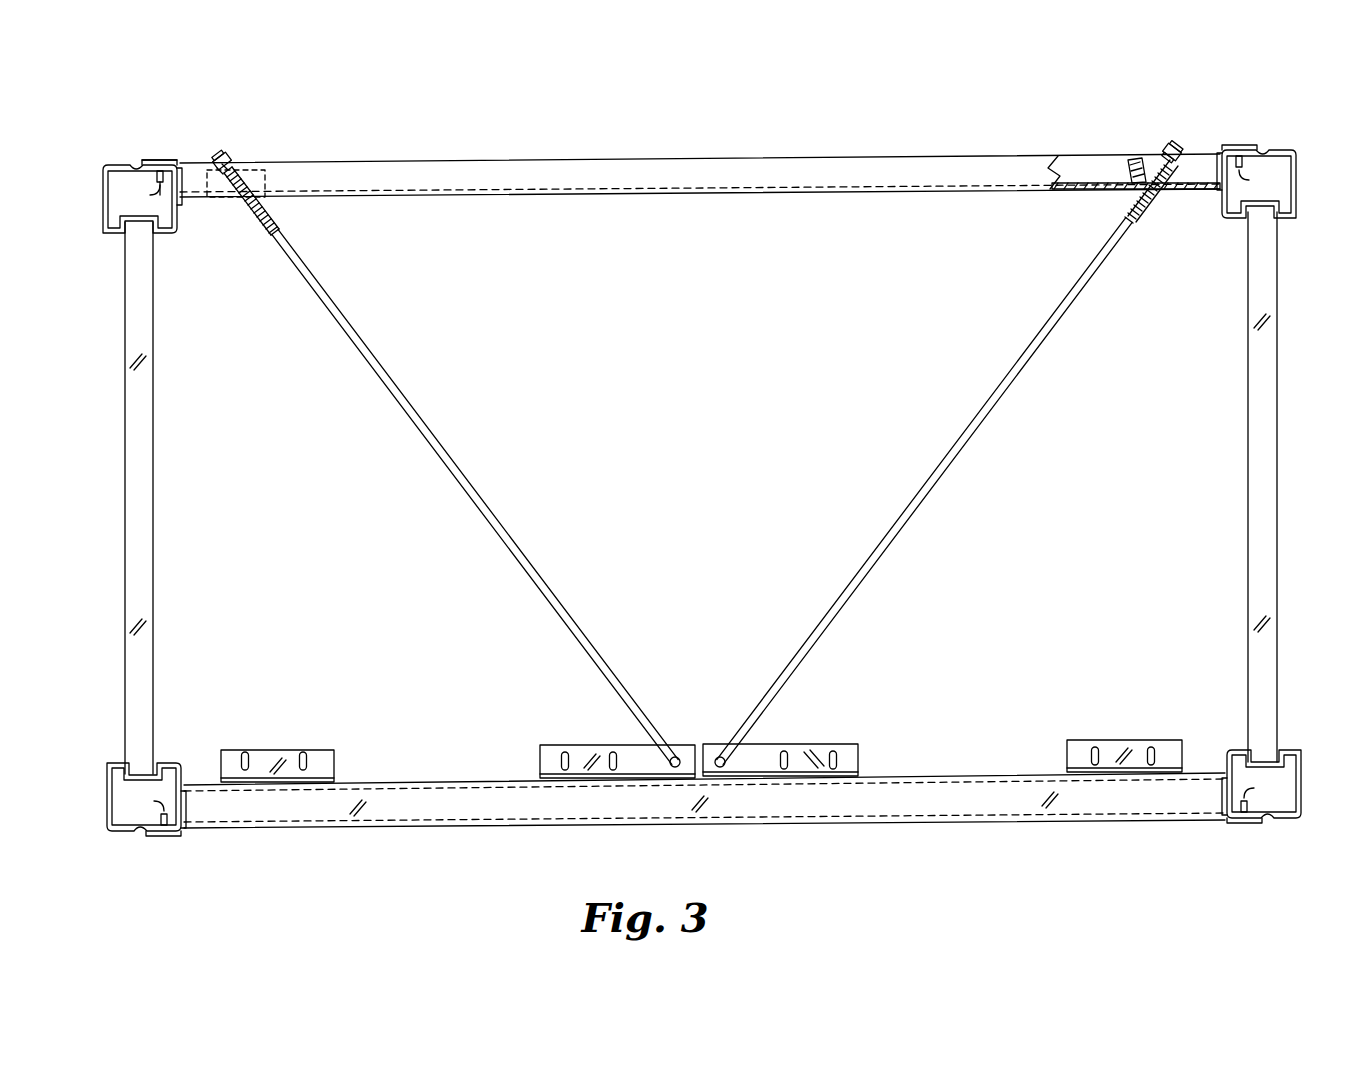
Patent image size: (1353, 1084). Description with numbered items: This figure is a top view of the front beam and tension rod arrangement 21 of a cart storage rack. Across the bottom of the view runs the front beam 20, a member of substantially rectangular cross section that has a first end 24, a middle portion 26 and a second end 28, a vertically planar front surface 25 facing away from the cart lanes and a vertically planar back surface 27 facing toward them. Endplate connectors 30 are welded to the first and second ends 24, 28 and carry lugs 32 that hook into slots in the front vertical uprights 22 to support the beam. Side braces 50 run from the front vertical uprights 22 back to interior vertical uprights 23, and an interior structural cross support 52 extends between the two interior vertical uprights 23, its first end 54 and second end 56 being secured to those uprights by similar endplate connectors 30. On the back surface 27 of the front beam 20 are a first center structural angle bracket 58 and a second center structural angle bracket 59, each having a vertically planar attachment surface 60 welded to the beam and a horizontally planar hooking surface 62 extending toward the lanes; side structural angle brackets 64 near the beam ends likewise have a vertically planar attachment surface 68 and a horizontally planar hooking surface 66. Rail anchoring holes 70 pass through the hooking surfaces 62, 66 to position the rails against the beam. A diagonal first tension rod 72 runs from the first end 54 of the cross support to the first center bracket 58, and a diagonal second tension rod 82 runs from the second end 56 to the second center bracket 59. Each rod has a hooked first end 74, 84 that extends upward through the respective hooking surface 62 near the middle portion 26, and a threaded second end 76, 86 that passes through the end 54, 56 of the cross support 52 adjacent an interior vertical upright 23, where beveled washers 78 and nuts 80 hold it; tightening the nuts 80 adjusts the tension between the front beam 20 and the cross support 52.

The front beam 20 is at (965, 812).
The front beam and tension rod arrangement 21 is at (790, 99).
The front vertical uprights 22 is at (110, 833).
The interior vertical uprights 23 is at (103, 173).
The first end 24 is at (192, 838).
The front surface 25 is at (483, 829).
The middle portion 26 is at (787, 842).
The back surface 27 is at (425, 782).
The second end 28 is at (1203, 832).
The endplate connectors 30 is at (160, 163).
The lugs 32 is at (110, 195).
The side braces 50 is at (130, 500).
The interior structural cross support 52 is at (631, 170).
The first end 54 is at (183, 148).
The second end 56 is at (1215, 135).
The first center structural angle bracket 58 is at (575, 762).
The second center structural angle bracket 59 is at (820, 750).
The vertically planar attachment surface 60 is at (545, 776).
The horizontally planar hooking surface 62 is at (640, 765).
The side structural angle brackets 64 is at (290, 760).
The horizontally planar hooking surface 66 is at (240, 760).
The vertically planar attachment surface 68 is at (322, 765).
The rail anchoring holes 70 is at (303, 752).
The first tension rod 72 is at (368, 352).
The hooked first end 74 is at (674, 756).
The threaded second end 76 is at (270, 205).
The beveled washers 78 is at (265, 170).
The nuts 80 is at (232, 157).
The second tension rod 82 is at (1003, 380).
The hooked first end 84 is at (720, 756).
The threaded second end 86 is at (1133, 190).